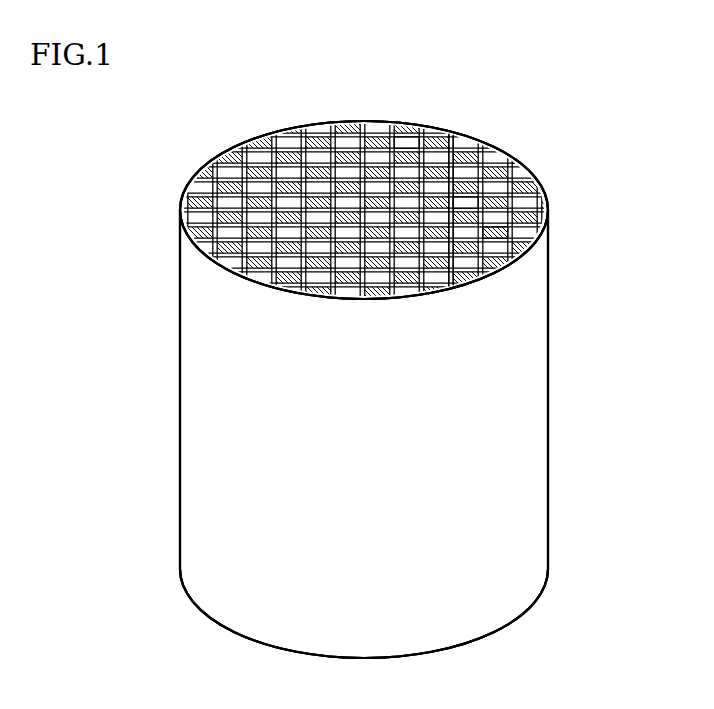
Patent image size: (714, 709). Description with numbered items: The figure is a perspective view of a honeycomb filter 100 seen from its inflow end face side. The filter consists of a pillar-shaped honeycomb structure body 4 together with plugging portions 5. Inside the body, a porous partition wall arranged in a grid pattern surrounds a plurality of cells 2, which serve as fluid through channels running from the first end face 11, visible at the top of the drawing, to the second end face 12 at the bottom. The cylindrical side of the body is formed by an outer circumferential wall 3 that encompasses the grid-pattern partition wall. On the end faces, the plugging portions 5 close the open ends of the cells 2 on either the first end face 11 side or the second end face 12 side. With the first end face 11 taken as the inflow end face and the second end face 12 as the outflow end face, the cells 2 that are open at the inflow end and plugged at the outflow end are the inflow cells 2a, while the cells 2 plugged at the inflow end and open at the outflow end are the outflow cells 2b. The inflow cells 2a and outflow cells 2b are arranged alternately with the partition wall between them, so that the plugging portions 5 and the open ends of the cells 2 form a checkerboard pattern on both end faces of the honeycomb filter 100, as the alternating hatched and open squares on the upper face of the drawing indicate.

The honeycomb filter 100 is at (676, 73).
The cells 2 is at (411, 205).
The inflow cells 2a is at (463, 203).
The outflow cells 2b is at (502, 230).
The outer circumferential wall 3 is at (517, 335).
The honeycomb structure body 4 is at (559, 249).
The plugging portions 5 is at (398, 137).
The first end face 11 is at (258, 139).
The second end face 12 is at (207, 616).